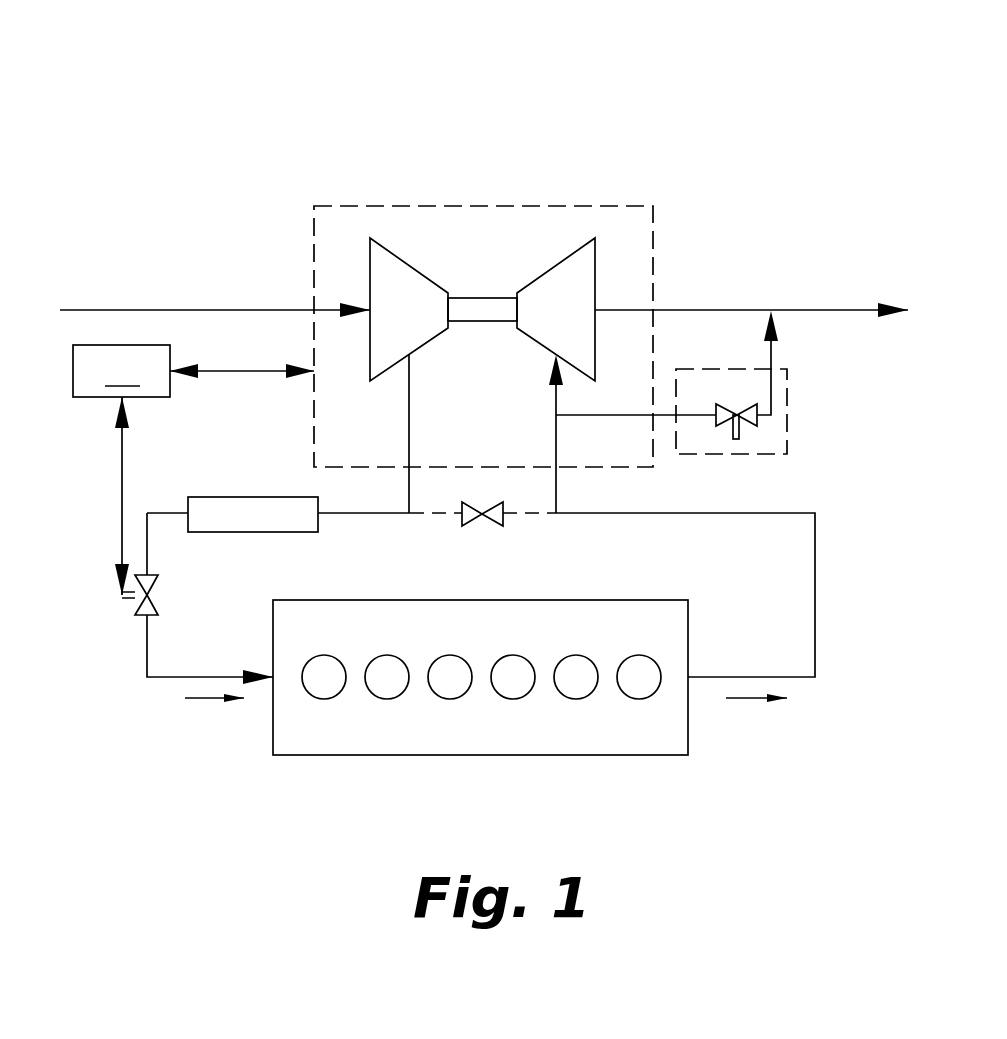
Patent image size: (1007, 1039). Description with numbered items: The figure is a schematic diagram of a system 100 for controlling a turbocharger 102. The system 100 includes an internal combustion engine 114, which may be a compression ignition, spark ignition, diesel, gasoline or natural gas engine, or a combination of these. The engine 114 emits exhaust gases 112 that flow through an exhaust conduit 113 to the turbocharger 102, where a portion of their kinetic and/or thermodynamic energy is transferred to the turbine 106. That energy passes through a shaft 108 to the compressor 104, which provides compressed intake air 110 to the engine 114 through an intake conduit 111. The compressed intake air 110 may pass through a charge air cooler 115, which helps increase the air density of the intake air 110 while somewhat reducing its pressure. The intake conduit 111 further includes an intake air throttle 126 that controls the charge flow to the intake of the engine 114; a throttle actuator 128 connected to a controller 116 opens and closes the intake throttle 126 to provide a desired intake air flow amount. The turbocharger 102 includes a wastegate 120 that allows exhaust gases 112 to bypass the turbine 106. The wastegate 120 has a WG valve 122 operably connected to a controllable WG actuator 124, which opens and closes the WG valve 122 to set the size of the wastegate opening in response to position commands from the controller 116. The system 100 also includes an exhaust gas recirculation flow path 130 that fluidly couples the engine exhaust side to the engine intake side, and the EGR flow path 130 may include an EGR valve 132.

The system 100 is at (154, 134).
The turbocharger 102 is at (413, 206).
The compressor 104 is at (370, 258).
The turbine 106 is at (595, 252).
The shaft 108 is at (494, 298).
The compressed intake air 110 is at (203, 698).
The intake conduit 111 is at (152, 677).
The exhaust gases 112 is at (753, 700).
The exhaust conduit 113 is at (815, 582).
The internal combustion engine 114 is at (457, 755).
The charge air cooler 115 is at (266, 497).
The controller 116 is at (193, 371).
The wastegate 120 is at (787, 390).
The WG valve 122 is at (757, 420).
The WG actuator 124 is at (741, 440).
The intake air throttle 126 is at (158, 602).
The throttle actuator 128 is at (122, 596).
The EGR flow path 130 is at (522, 553).
The EGR valve 132 is at (488, 503).